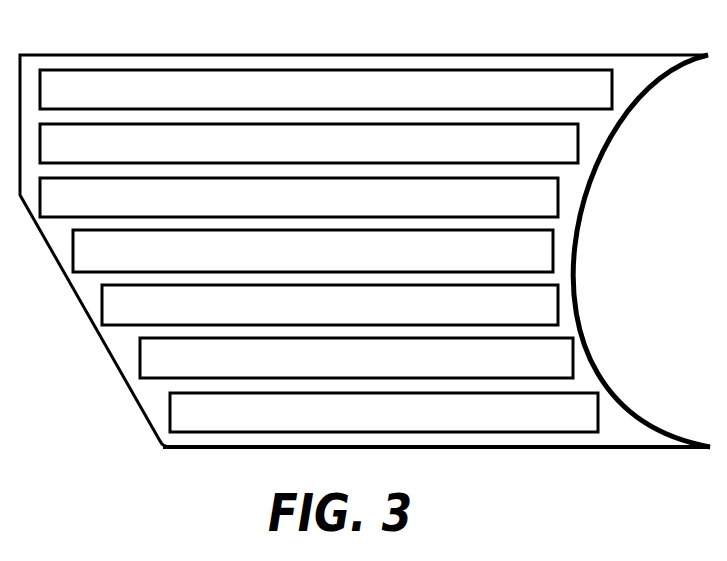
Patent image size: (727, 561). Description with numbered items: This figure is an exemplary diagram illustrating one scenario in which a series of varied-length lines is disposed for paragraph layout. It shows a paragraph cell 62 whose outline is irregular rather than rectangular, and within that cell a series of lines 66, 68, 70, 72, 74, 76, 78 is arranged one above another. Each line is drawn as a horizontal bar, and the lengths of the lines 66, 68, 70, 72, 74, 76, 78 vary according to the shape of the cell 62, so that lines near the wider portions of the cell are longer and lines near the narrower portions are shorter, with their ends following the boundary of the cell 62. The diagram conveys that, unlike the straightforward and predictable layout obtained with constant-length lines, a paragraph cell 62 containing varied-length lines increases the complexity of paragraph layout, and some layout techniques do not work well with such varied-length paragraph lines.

The cell 62 is at (115, 55).
The line 66 is at (612, 92).
The line 68 is at (578, 143).
The line 70 is at (558, 195).
The line 72 is at (553, 252).
The line 74 is at (558, 305).
The line 76 is at (573, 356).
The line 78 is at (598, 410).